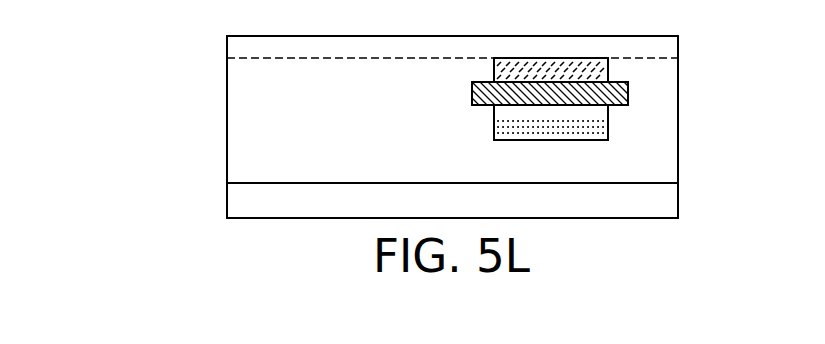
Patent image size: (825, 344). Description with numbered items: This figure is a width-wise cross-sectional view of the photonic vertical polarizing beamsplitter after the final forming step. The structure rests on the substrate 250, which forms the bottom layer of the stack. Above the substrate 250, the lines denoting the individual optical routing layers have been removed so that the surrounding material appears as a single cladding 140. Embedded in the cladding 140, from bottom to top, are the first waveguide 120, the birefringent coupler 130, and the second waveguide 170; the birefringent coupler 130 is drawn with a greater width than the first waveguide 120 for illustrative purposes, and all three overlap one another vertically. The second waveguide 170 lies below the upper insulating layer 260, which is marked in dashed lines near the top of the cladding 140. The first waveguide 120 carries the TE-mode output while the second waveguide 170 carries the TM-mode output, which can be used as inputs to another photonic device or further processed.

The first waveguide 120 is at (595, 121).
The birefringent coupler 130 is at (617, 92).
The cladding 140 is at (238, 110).
The second waveguide 170 is at (597, 70).
The substrate 250 is at (665, 200).
The upper insulating layer 260 is at (665, 48).